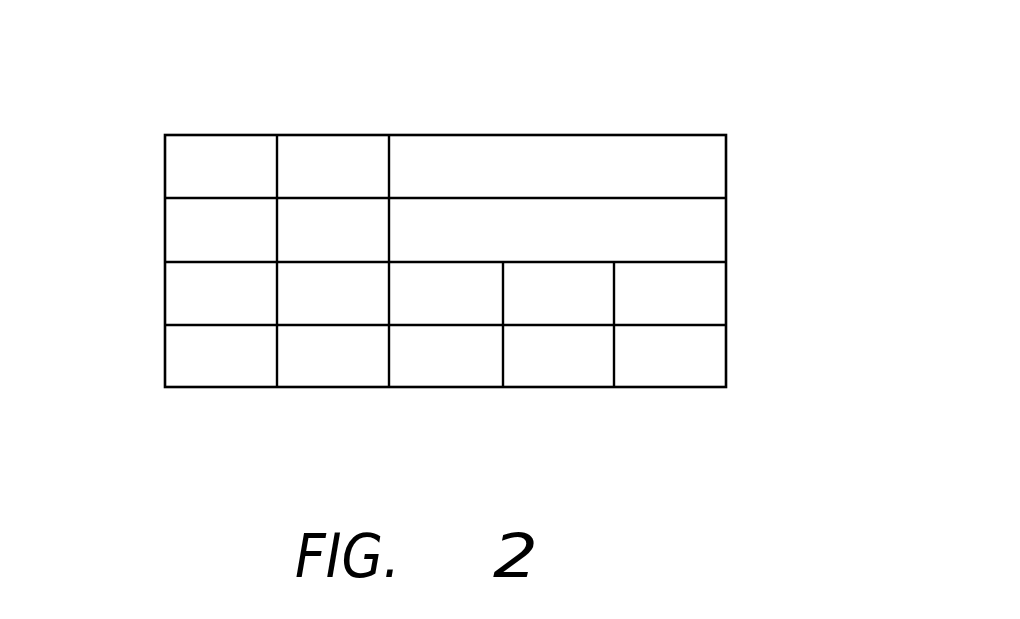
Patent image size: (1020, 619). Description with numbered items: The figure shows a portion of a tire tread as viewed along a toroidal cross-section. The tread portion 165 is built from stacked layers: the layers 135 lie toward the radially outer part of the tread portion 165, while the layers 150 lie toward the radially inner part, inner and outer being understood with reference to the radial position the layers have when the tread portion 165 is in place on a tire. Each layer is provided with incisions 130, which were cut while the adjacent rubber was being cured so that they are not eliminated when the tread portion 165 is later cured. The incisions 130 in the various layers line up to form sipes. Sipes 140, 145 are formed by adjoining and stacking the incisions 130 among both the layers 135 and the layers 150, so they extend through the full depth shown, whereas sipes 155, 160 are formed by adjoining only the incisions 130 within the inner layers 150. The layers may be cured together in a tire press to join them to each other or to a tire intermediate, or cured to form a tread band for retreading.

The incision 130 is at (390, 190).
The outer layers 135 is at (125, 135).
The sipe 140 is at (277, 136).
The sipe 145 is at (389, 136).
The inner layers 150 is at (125, 262).
The sipe 155 is at (503, 387).
The sipe 160 is at (614, 387).
The tread portion 165 is at (693, 87).